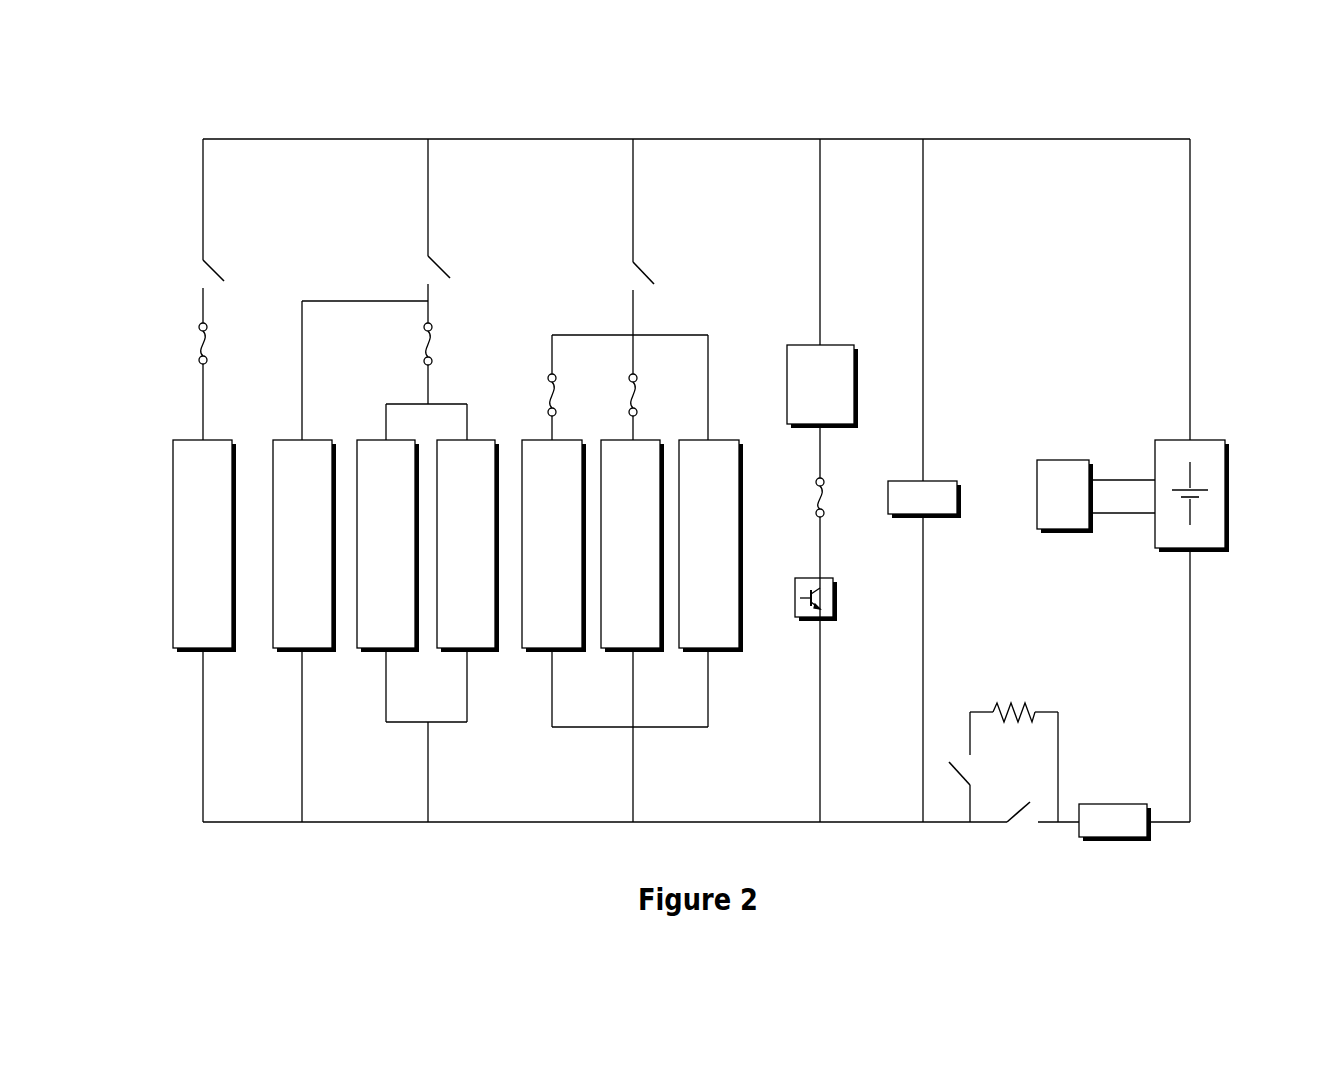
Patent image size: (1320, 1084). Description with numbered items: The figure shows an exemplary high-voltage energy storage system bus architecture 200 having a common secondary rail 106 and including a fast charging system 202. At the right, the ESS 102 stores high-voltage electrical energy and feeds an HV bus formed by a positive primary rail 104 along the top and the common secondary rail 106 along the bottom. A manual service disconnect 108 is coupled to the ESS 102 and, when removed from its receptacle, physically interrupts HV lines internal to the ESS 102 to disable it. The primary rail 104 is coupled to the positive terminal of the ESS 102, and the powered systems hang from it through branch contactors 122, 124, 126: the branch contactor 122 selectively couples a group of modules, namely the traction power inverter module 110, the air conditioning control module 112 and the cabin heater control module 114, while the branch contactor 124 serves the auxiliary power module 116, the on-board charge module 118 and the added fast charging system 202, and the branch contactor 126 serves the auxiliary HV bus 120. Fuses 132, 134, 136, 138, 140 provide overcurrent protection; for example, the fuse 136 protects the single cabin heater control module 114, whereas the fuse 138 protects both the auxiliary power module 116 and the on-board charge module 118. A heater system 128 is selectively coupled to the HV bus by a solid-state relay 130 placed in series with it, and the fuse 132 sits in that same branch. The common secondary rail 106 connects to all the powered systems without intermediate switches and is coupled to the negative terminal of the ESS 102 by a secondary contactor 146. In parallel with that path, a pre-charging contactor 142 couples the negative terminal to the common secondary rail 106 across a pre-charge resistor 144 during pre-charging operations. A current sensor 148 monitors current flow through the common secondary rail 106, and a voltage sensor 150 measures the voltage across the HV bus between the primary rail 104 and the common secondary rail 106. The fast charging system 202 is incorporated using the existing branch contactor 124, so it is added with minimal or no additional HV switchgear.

The HV ESS bus architecture 200 is at (245, 112).
The ESS 102 is at (1226, 530).
The primary rail 104 is at (926, 139).
The common secondary rail 106 is at (543, 826).
The manual service disconnect 108 is at (1077, 504).
The traction power inverter module 110 is at (723, 552).
The air conditioning control module 112 is at (645, 552).
The cabin heater control module 114 is at (566, 552).
The auxiliary power module 116 is at (480, 552).
The on-board charge module 118 is at (400, 552).
The auxiliary HV bus 120 is at (217, 552).
The branch contactor 122 is at (645, 270).
The branch contactor 124 is at (440, 266).
The branch contactor 126 is at (215, 268).
The heater system 128 is at (834, 394).
The solid-state relay 130 is at (835, 618).
The fuse 132 is at (816, 479).
The fuse 134 is at (637, 378).
The fuse 136 is at (548, 379).
The fuse 138 is at (432, 360).
The fuse 140 is at (207, 359).
The pre-charging contactor 142 is at (959, 781).
The pre-charge resistor 144 is at (1012, 702).
The secondary contactor 146 is at (1027, 812).
The current sensor 148 is at (1127, 831).
The voltage sensor 150 is at (937, 507).
The fast charging system 202 is at (316, 552).